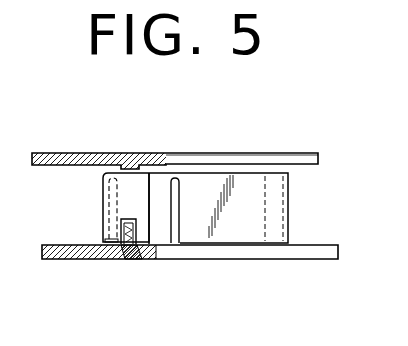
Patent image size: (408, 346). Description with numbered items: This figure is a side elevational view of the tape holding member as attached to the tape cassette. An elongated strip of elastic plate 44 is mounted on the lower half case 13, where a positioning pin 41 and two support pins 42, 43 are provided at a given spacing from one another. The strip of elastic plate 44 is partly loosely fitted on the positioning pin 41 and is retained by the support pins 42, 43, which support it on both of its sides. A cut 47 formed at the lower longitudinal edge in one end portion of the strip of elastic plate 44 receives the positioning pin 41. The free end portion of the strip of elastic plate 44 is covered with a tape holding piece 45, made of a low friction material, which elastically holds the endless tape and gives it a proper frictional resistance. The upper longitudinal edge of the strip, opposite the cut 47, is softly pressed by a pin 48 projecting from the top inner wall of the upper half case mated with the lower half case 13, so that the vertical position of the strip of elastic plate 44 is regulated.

The lower half case 13 is at (278, 260).
The positioning pin 41 is at (138, 260).
The support pin 42 is at (112, 203).
The support pin 43 is at (172, 222).
The strip of elastic plate 44 is at (125, 188).
The tape holding piece 45 is at (250, 195).
The cut 47 is at (121, 261).
The pin 48 is at (143, 164).